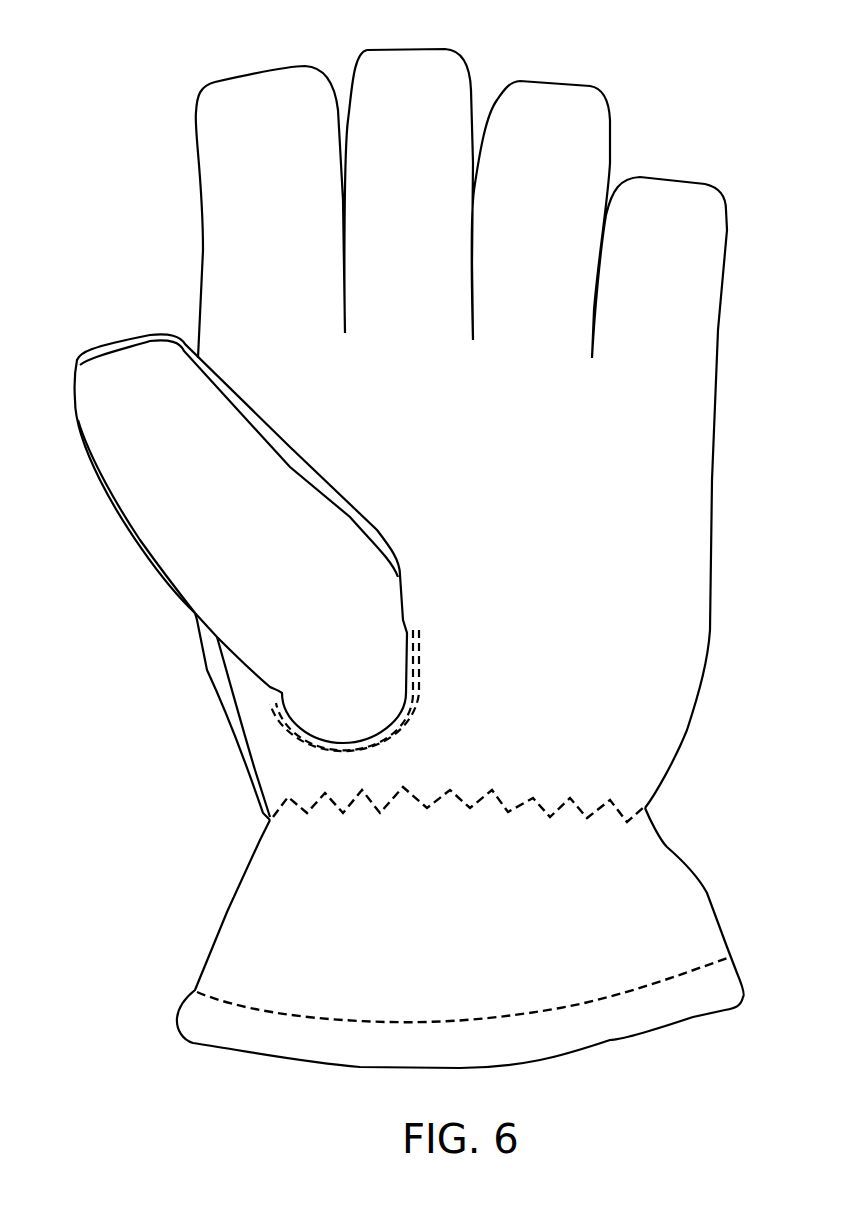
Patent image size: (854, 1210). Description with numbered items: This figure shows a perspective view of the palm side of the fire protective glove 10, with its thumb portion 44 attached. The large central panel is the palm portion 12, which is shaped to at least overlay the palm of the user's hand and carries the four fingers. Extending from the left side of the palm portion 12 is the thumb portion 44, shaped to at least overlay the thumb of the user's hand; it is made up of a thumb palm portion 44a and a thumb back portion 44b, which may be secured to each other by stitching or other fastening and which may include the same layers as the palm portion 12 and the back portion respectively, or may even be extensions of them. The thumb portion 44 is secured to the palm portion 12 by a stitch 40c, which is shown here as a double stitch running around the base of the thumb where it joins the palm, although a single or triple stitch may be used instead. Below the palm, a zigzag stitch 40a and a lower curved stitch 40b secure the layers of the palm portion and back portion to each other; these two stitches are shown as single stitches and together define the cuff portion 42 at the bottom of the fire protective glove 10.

The fire protective glove 10 is at (103, 102).
The palm portion 12 is at (703, 478).
The stitch 40a is at (492, 790).
The stitch 40b is at (653, 987).
The stitch 40c is at (418, 688).
The cuff portion 42 is at (227, 912).
The thumb portion 44 is at (75, 415).
The thumb palm portion 44a is at (187, 350).
The thumb back portion 44b is at (113, 493).